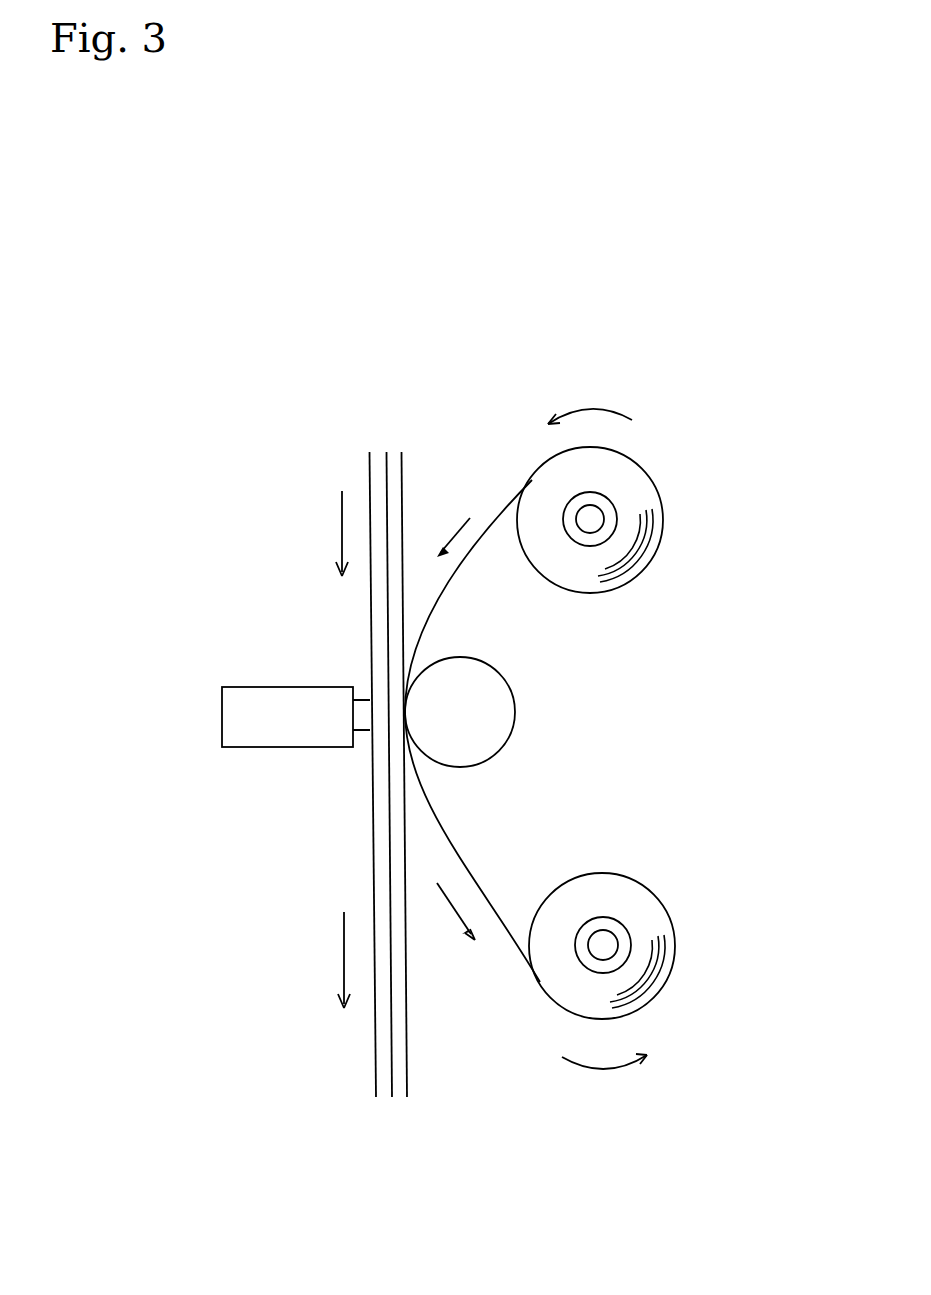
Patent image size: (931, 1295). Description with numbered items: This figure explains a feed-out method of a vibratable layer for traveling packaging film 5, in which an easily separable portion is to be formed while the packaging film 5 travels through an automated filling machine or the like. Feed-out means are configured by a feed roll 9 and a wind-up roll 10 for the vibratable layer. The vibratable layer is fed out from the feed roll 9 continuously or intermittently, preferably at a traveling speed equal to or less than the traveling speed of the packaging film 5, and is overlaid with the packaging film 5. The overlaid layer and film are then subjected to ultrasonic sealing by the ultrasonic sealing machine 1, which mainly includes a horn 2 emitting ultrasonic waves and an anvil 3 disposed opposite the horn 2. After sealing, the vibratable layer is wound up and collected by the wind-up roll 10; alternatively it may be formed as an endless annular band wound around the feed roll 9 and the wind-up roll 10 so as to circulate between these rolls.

The ultrasonic sealing machine 1 is at (273, 675).
The horn 2 is at (362, 712).
The anvil 3 is at (498, 710).
The packaging film 5 is at (375, 457).
The feed roll 9 is at (635, 485).
The wind-up roll 10 is at (643, 908).